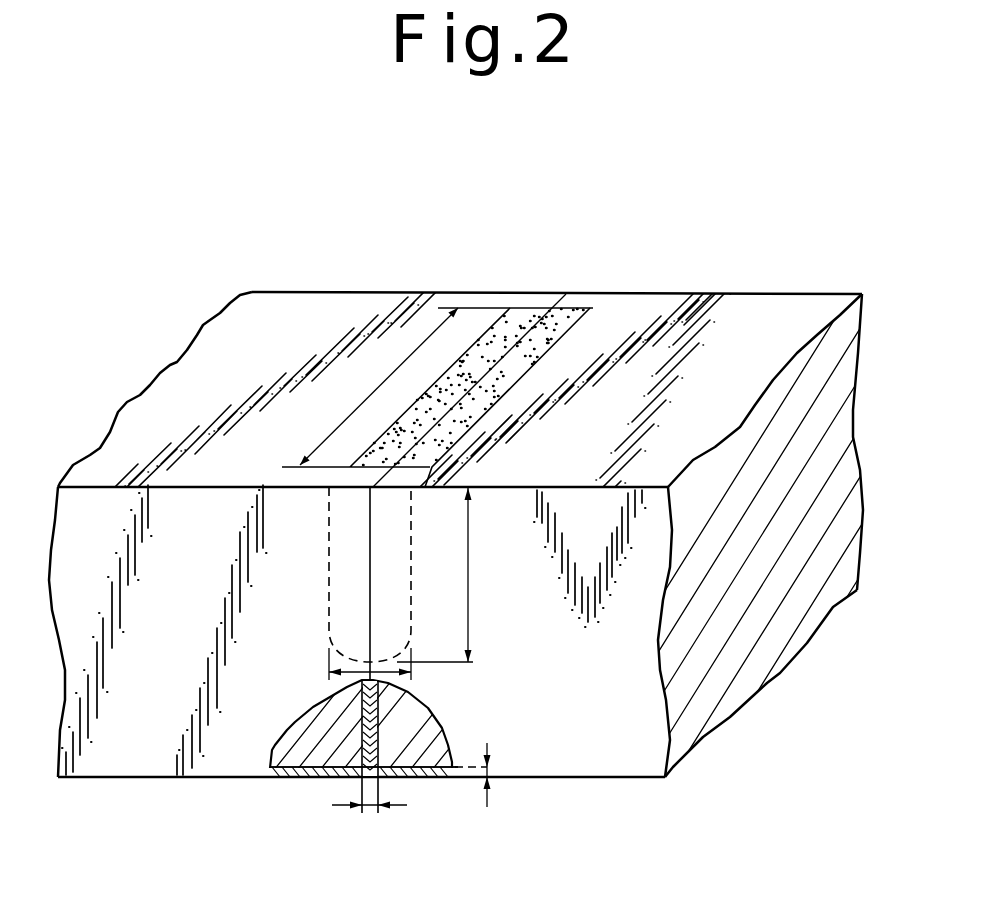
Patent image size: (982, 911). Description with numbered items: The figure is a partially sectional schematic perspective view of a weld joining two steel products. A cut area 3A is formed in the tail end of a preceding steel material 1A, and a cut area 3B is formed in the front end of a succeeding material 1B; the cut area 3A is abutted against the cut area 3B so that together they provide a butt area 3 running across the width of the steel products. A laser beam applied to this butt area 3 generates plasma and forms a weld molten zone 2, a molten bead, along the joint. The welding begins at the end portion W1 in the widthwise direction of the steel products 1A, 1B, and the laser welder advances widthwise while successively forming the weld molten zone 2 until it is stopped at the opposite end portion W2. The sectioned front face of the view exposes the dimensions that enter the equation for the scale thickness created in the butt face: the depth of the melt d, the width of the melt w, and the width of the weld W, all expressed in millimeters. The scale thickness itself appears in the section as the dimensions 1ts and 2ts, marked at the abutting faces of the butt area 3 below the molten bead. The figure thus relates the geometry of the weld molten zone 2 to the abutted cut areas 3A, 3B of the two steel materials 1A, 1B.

The weld molten zone 2 is at (575, 310).
The butt area 3 is at (366, 578).
The preceding steel material 1A is at (621, 660).
The succeeding material 1B is at (188, 660).
The cut area 3A is at (407, 778).
The cut area 3B is at (407, 778).
The width of the weld W is at (370, 387).
The end portion in the widthwise direction W1 is at (593, 308).
The end portion in the widthwise direction W2 is at (367, 468).
The depth of the melt d is at (446, 575).
The width of the melt w is at (355, 680).
The backing layer thickness 1ts is at (487, 768).
The root gap width 2ts is at (362, 812).